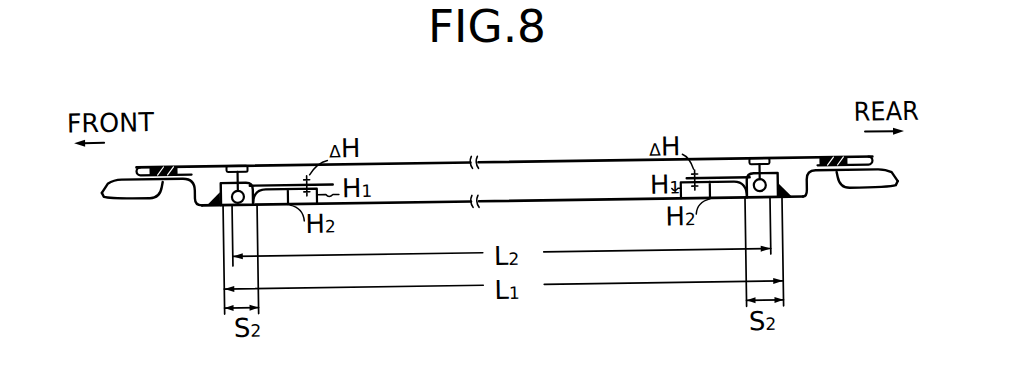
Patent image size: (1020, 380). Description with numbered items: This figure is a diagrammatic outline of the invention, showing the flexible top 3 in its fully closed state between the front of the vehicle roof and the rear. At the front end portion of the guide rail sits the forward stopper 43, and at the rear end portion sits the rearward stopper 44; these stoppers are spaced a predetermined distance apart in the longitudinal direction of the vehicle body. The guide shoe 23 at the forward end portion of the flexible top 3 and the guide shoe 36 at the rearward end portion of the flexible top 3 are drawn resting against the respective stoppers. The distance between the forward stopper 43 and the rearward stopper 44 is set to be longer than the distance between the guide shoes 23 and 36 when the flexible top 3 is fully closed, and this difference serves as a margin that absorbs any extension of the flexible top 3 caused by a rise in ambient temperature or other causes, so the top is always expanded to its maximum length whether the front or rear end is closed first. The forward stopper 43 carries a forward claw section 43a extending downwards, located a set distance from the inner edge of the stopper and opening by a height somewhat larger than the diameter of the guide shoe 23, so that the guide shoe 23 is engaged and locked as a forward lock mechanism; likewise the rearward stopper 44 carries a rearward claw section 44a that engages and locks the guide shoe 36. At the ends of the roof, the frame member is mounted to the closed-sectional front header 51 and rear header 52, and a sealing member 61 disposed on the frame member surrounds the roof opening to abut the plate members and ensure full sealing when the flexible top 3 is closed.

The flexible top 3 is at (548, 162).
The guide shoe 23 is at (252, 197).
The guide shoe 36 is at (728, 202).
The forward stopper 43 is at (211, 197).
The forward claw section 43a is at (253, 180).
The rearward stopper 44 is at (785, 193).
The rearward claw section 44a is at (745, 179).
The front header 51 is at (124, 196).
The rear header 52 is at (874, 202).
The sealing member 61 is at (170, 176).